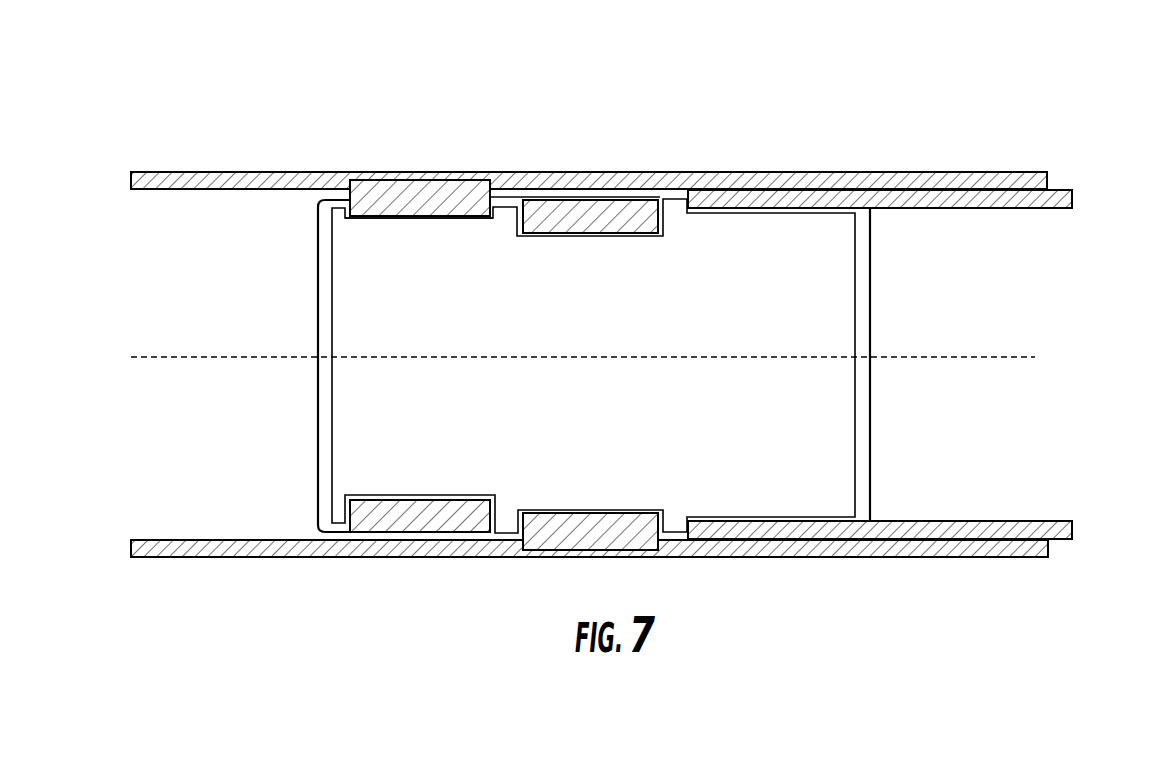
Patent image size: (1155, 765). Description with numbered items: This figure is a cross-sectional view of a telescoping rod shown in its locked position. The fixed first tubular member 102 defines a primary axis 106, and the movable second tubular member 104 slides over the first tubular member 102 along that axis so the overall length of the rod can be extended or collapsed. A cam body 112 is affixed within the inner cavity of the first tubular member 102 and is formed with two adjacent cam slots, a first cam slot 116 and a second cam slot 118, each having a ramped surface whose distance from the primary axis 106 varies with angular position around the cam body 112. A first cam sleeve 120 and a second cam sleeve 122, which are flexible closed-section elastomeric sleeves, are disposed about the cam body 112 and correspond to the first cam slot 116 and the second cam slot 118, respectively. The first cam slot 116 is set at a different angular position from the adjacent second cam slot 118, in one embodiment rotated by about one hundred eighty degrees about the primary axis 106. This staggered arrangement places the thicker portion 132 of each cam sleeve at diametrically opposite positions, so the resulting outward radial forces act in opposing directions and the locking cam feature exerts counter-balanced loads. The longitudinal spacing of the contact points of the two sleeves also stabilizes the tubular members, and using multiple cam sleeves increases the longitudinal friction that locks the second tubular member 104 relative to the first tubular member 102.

The first tubular member 102 is at (1058, 190).
The second tubular member 104 is at (183, 172).
The primary axis 106 is at (1012, 357).
The cam body 112 is at (872, 270).
The first cam slot 116 is at (417, 226).
The second cam slot 118 is at (592, 240).
The first cam sleeve 120 is at (420, 535).
The second cam sleeve 122 is at (572, 553).
The thicker portion 132 is at (388, 204).